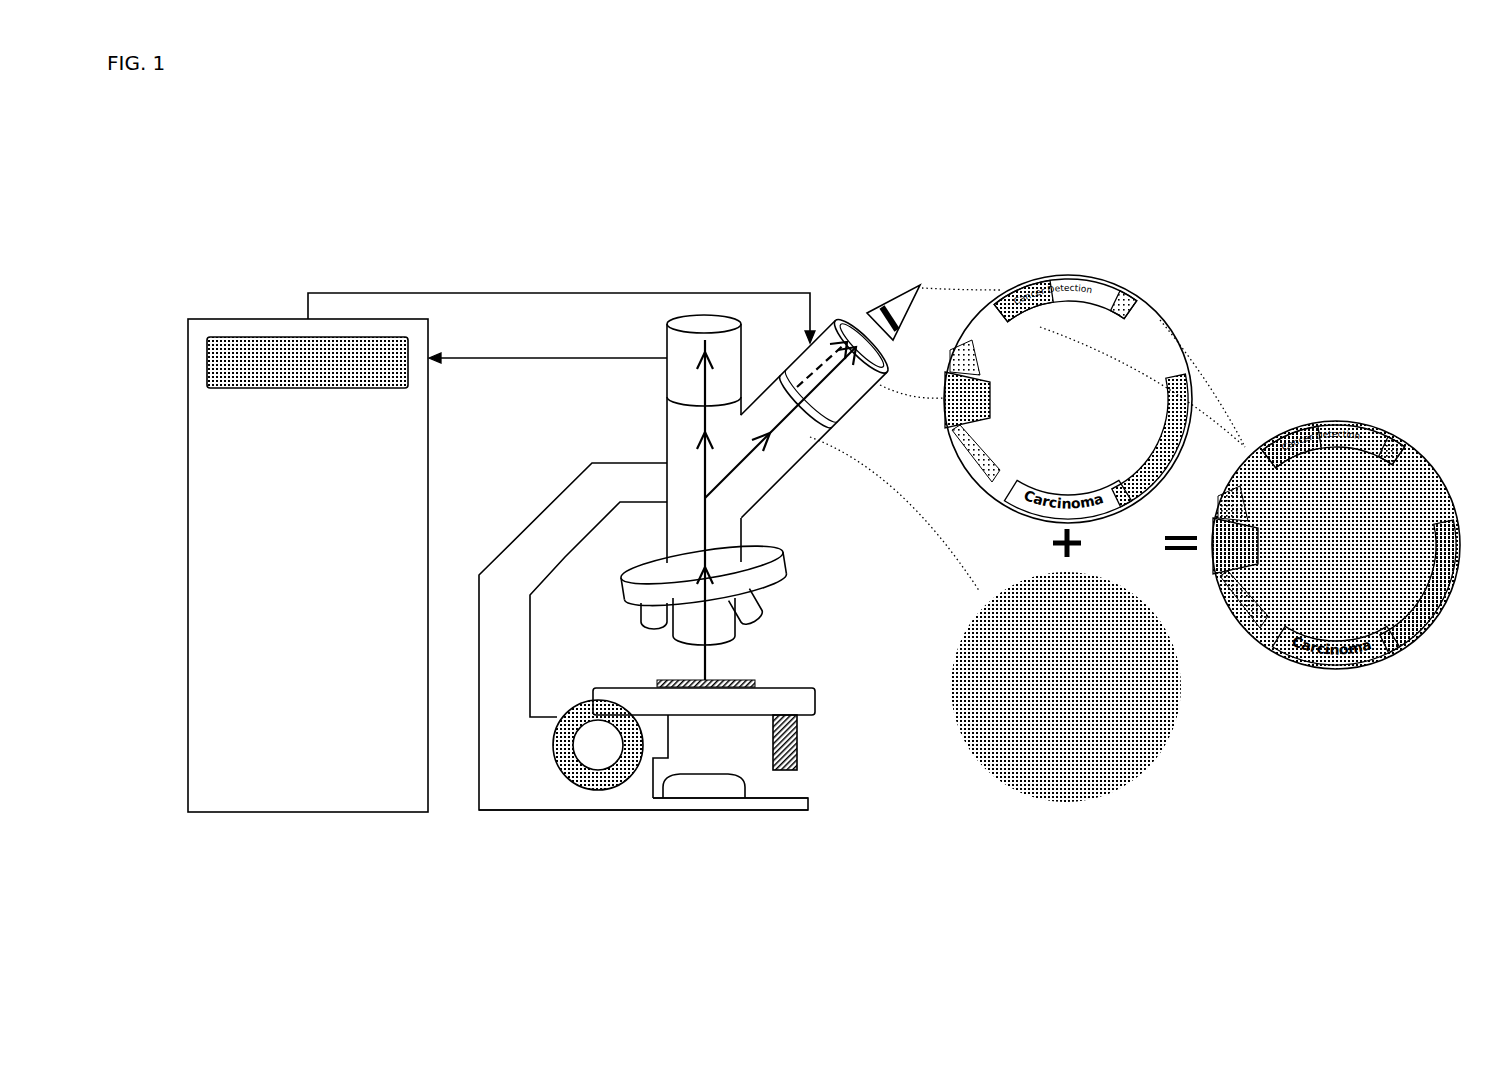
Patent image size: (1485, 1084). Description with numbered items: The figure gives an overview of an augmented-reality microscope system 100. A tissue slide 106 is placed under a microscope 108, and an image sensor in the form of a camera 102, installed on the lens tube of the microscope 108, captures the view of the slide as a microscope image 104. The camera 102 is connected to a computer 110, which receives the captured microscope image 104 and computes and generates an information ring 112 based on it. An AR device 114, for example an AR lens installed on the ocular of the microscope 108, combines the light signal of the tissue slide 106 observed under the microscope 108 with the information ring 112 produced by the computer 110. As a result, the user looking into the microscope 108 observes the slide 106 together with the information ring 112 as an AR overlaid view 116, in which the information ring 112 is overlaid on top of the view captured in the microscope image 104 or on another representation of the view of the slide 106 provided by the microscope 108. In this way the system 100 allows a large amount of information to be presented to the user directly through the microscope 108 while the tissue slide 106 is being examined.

The AR microscope system 100 is at (228, 74).
The camera 102 is at (662, 375).
The microscope image 104 is at (1192, 687).
The tissue slide 106 is at (733, 675).
The microscope 108 is at (810, 812).
The computer 110 is at (308, 565).
The information ring 112 is at (1165, 320).
The AR device 114 is at (865, 387).
The AR overlaid view 116 is at (1420, 447).